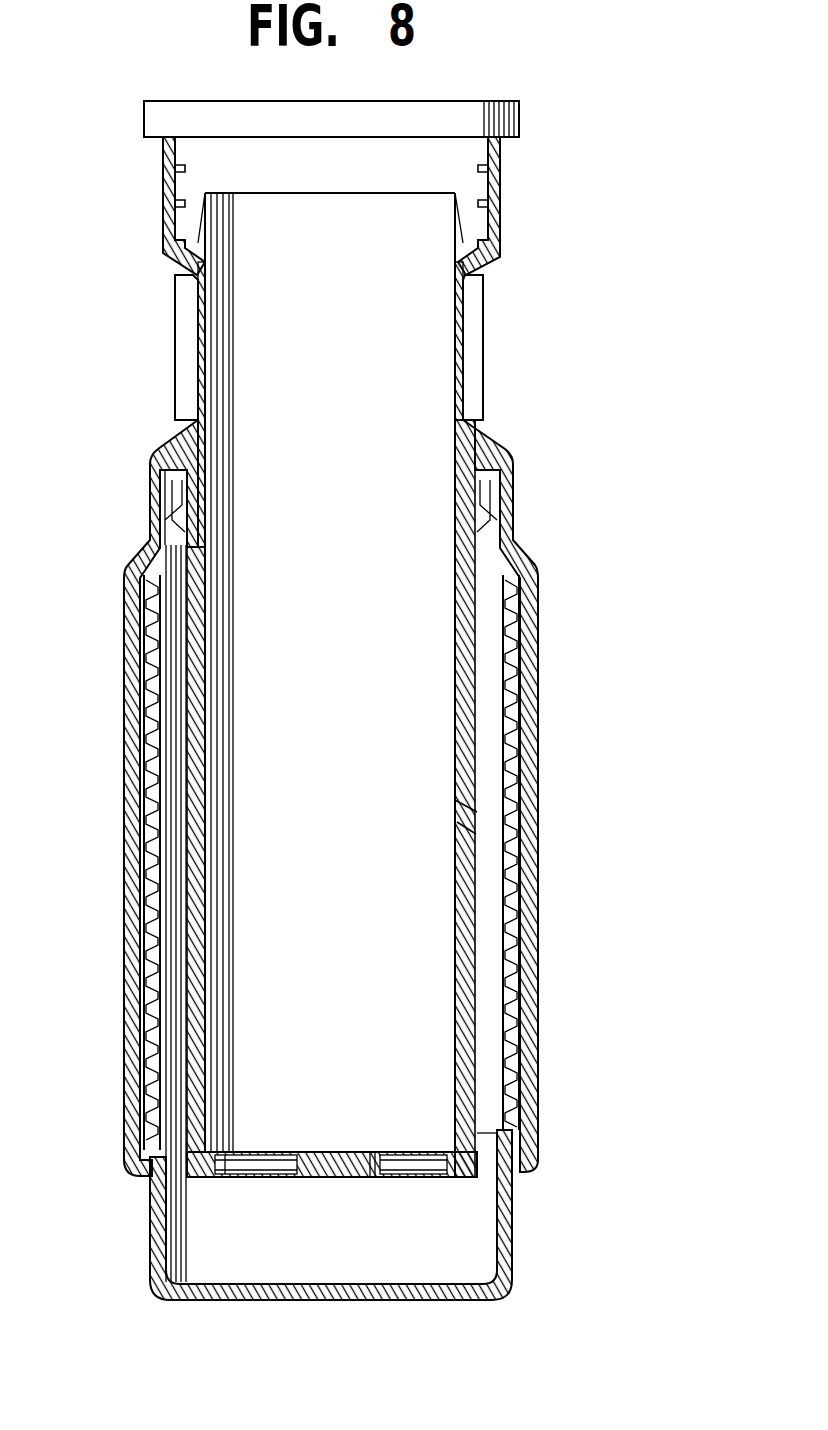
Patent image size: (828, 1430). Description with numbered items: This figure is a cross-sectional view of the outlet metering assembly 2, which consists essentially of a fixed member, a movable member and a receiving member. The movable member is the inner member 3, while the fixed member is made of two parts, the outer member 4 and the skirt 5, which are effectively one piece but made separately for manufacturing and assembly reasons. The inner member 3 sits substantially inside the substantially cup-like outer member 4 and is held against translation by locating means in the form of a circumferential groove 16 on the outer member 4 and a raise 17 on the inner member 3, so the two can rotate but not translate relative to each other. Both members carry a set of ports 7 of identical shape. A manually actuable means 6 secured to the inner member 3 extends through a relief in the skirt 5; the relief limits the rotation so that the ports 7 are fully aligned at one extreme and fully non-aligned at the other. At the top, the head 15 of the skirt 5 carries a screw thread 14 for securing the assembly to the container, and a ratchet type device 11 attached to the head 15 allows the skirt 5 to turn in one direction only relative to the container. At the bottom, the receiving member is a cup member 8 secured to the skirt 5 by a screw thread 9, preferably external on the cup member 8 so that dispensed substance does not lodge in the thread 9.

The outlet metering assembly 2 is at (562, 718).
The inner member 3 is at (460, 900).
The outer member 4 is at (477, 948).
The skirt 5 is at (540, 653).
The manually actuable means 6 is at (188, 337).
The ports 7 is at (410, 1185).
The cup member 8 is at (498, 1292).
The screw thread 9 is at (140, 1048).
The ratchet type device 11 is at (519, 118).
The screw thread 14 is at (178, 203).
The head 15 is at (515, 185).
The circumferential groove 16 is at (477, 813).
The raise 17 is at (478, 832).